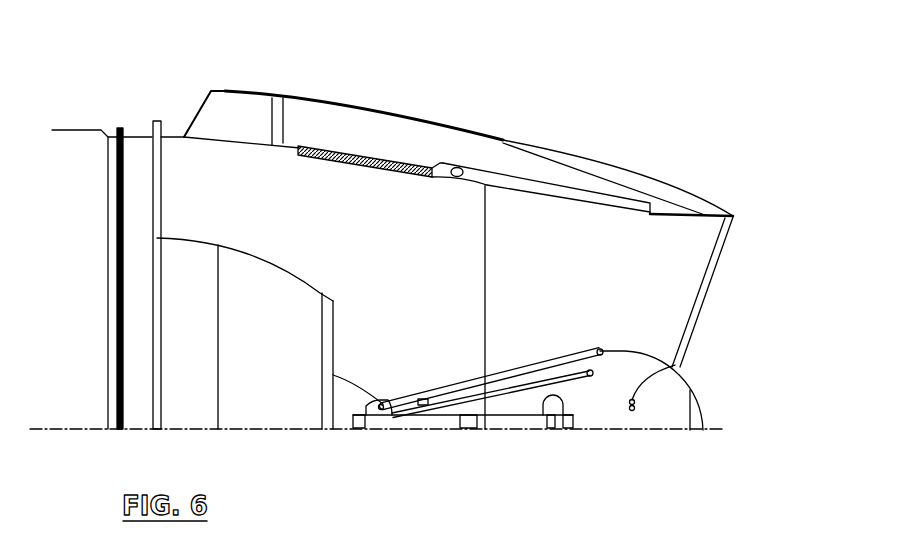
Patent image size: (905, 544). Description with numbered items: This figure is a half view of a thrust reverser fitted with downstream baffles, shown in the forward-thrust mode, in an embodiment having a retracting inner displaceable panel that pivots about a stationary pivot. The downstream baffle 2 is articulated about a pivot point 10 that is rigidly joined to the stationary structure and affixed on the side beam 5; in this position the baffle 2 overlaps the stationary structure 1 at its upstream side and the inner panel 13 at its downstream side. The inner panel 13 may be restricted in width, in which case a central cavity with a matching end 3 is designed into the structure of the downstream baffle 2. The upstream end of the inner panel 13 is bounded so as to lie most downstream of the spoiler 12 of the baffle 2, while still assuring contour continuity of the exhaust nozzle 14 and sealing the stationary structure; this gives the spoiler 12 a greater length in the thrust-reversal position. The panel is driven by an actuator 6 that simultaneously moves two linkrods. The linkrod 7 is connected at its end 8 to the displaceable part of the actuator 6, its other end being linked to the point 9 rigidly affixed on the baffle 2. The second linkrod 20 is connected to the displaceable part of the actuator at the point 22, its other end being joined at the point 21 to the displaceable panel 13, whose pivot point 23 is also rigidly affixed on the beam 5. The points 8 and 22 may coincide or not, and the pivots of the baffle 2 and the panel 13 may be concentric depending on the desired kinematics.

The stationary structure 1 is at (245, 107).
The downstream baffle 2 is at (623, 178).
The matching end 3 is at (373, 113).
The side beam 5 is at (668, 418).
The actuator 6 is at (452, 425).
The linkrod 7 is at (465, 387).
The end of linkrod 8 is at (380, 404).
The point 9 is at (601, 349).
The pivot point 10 is at (632, 411).
The spoiler 12 is at (287, 118).
The inner panel 13 is at (523, 186).
The exhaust nozzle 14 is at (623, 210).
The second linkrod 20 is at (424, 405).
The point 21 is at (590, 380).
The point 22 is at (392, 420).
The pivot point 23 is at (675, 365).